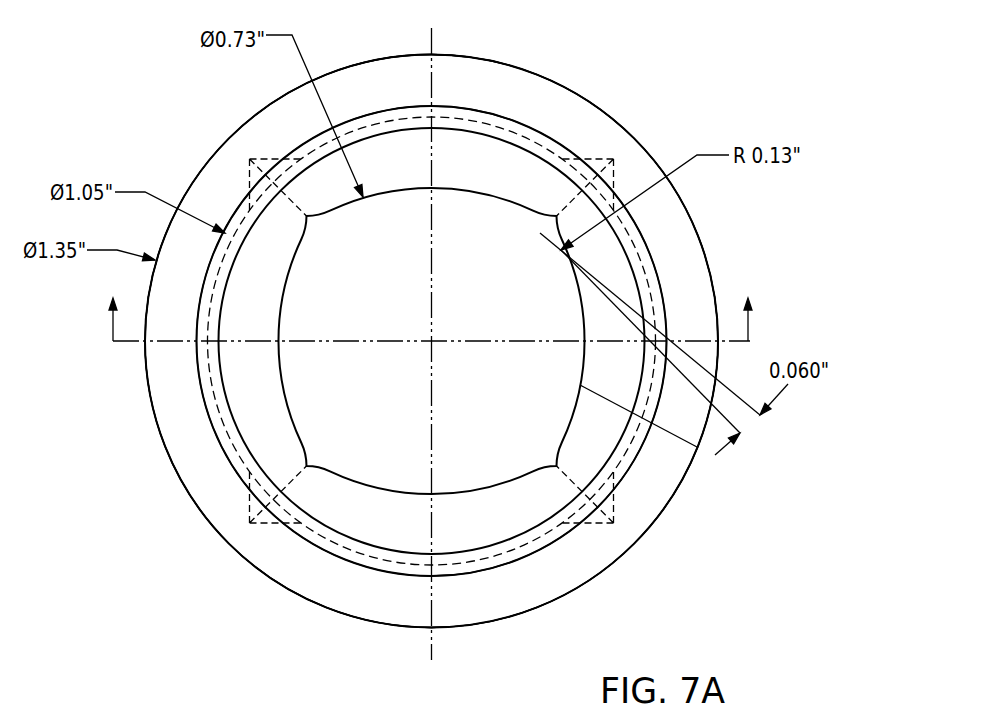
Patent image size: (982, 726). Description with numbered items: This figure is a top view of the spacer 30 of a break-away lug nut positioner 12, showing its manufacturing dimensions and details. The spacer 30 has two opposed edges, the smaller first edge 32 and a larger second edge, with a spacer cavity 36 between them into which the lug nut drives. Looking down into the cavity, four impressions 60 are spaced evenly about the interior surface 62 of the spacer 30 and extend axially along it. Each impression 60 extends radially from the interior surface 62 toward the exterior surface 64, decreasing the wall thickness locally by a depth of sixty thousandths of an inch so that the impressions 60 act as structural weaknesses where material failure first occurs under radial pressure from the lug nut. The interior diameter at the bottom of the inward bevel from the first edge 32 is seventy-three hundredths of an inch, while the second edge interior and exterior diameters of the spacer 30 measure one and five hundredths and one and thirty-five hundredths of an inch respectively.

The break-away lug nut positioner 12 is at (655, 48).
The spacer 30 is at (632, 133).
The first edge 32 is at (213, 398).
The spacer cavity 36 is at (638, 457).
The impressions 60 is at (553, 213).
The interior surface 62 is at (653, 417).
The exterior surface 64 is at (630, 545).